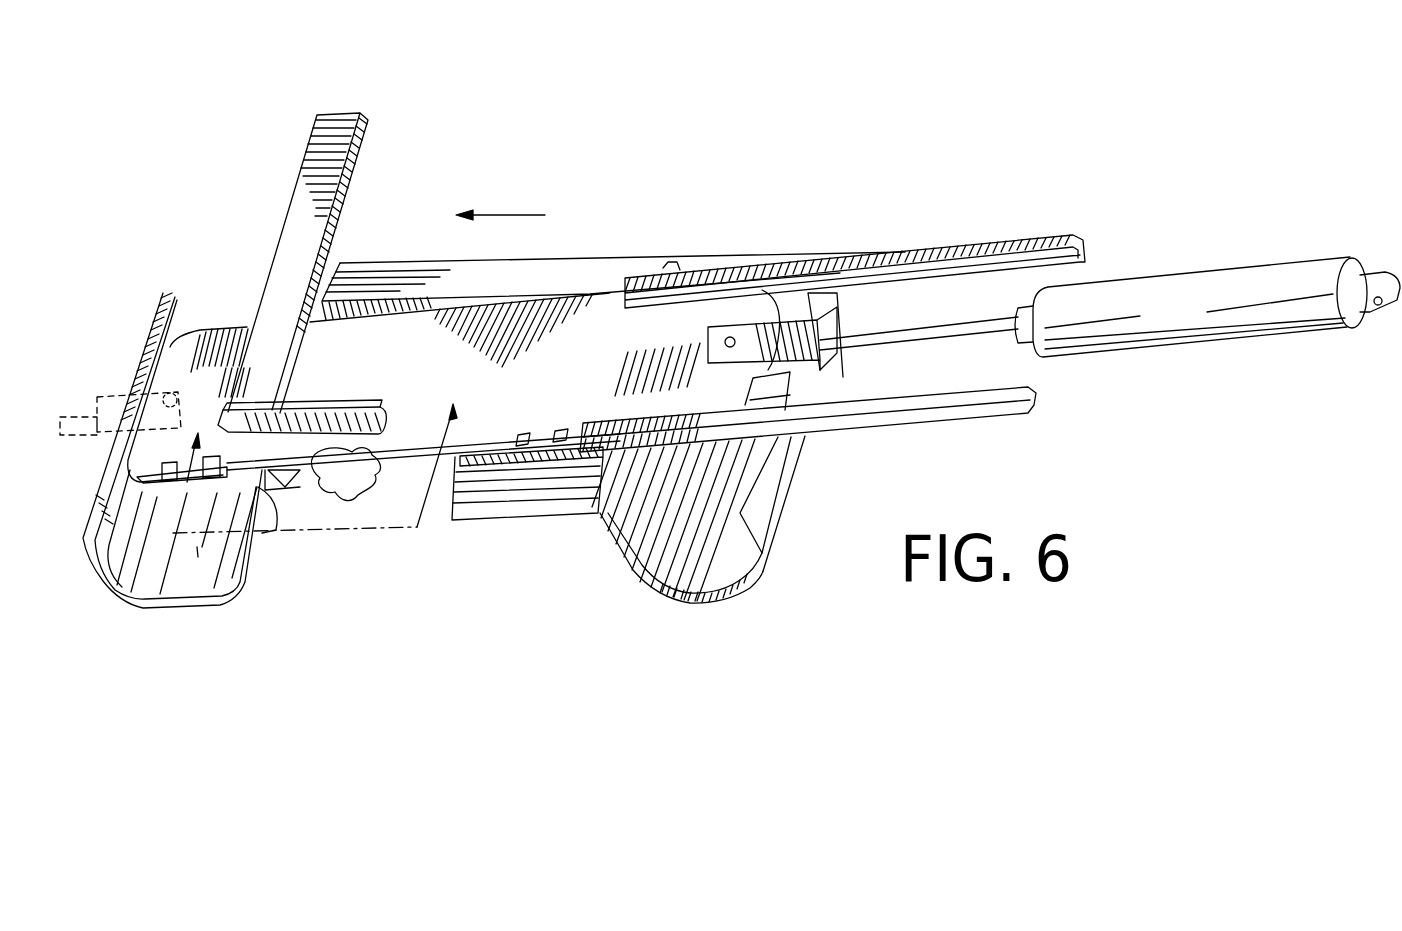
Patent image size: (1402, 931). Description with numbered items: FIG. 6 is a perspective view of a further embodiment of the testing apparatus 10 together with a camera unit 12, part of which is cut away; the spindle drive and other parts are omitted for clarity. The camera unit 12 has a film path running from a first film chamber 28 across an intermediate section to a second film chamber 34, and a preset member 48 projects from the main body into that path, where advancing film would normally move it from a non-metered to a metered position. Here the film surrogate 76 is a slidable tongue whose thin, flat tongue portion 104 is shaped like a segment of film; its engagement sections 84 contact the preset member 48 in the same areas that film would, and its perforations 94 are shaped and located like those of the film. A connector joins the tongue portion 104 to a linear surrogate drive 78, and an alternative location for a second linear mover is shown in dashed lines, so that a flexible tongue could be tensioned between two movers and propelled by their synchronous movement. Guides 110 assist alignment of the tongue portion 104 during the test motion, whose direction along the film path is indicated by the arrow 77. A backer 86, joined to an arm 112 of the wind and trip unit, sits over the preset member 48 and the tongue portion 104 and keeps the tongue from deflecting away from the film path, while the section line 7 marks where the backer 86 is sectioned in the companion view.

The apparatus 10 is at (734, 113).
The camera unit 12 is at (775, 506).
The first film chamber 28 is at (690, 590).
The second film chamber 34 is at (167, 588).
The preset member 48 is at (355, 492).
The film surrogate 76 is at (737, 270).
The direction of movement 77 is at (497, 210).
The surrogate drive 78 is at (1200, 283).
The engagement sections 84 is at (522, 440).
The backer 86 is at (338, 408).
The perforations 94 is at (558, 428).
The tongue portion 104 is at (222, 329).
The guides 110 is at (1005, 245).
The arm 112 is at (364, 126).
The section line 7- 7 is at (319, 465).